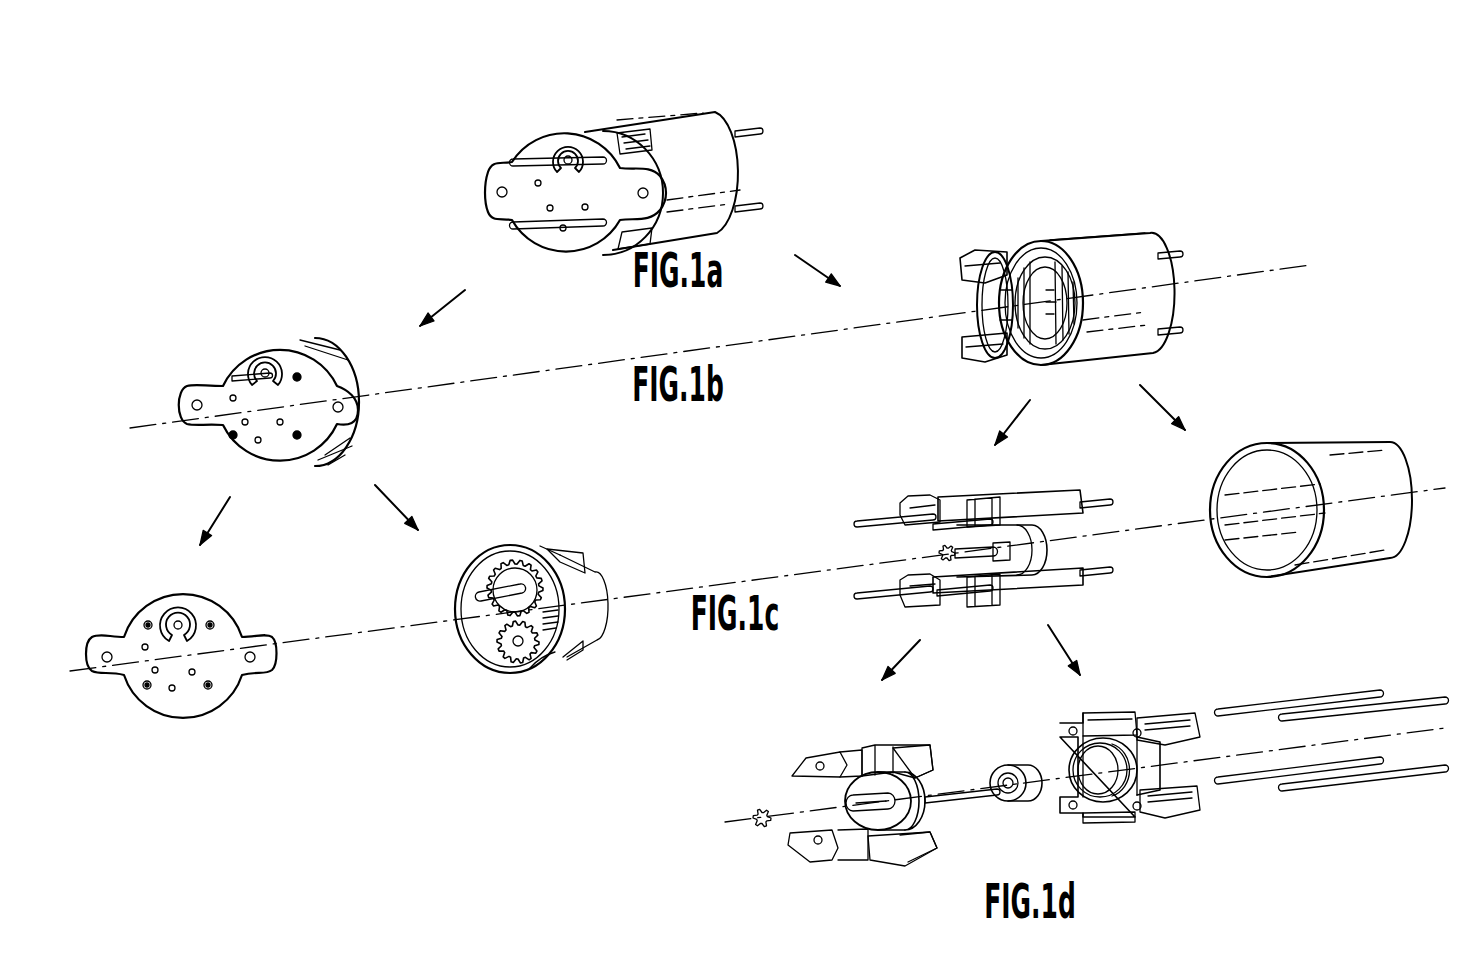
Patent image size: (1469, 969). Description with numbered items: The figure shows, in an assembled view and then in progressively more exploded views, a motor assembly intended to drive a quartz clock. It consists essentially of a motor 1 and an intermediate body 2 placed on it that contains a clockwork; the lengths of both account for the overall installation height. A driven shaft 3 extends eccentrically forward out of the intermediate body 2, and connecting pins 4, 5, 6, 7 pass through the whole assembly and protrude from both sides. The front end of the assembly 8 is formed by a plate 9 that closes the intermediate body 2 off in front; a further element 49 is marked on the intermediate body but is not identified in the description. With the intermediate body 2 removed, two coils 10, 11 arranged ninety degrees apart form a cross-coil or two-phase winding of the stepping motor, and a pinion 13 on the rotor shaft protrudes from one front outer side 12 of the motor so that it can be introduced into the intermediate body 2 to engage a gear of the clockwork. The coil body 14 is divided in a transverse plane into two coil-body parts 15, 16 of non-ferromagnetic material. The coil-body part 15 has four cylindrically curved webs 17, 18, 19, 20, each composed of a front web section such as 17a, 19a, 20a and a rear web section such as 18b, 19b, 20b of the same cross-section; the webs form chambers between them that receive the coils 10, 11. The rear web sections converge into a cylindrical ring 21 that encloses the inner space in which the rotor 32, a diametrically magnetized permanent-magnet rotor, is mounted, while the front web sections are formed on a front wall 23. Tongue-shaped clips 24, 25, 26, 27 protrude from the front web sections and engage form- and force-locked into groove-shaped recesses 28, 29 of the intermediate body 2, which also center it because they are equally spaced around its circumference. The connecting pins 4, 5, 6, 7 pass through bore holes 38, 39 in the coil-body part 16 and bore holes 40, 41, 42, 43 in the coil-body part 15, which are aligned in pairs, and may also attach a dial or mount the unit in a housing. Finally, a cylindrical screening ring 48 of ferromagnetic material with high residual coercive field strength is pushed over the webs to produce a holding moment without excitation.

In FIG. 1A, the motor 1 is at (712, 125).
In FIG. 1B, the motor 1 is at (1138, 250).
In FIG. 1A, the intermediate body 2 is at (606, 130).
In FIG. 1B, the intermediate body 2 is at (342, 362).
In FIG. 1C, the intermediate body 2 is at (540, 545).
In FIG. 1A, the driven shaft 3 is at (510, 198).
In FIG. 1B, the driven shaft 3 is at (235, 378).
In FIG. 1A, the connecting pin 4 is at (512, 162).
In FIG. 1D, the connecting pin 4 is at (1270, 708).
In FIG. 1A, the connecting pin 5 is at (510, 228).
In FIG. 1D, the connecting pin 5 is at (1260, 783).
In FIG. 1A, the connecting pin 6 is at (757, 128).
In FIG. 1D, the connecting pin 6 is at (1427, 701).
In FIG. 1A, the connecting pin 7 is at (758, 210).
In FIG. 1D, the connecting pin 7 is at (1407, 773).
In FIG. 1A, the front end of the assembly 8 is at (553, 243).
In FIG. 1A, the plate 9 is at (565, 137).
In FIG. 1C, the plate 9 is at (203, 612).
In FIG. 1B, the coil 10 is at (1010, 248).
In FIG. 1B, the coil 11 is at (1087, 342).
In FIG. 1B, the front outer side of the motor 12 is at (1010, 352).
In FIG. 1B, the pinion 13 is at (975, 300).
In FIG. 1C, the pinion 13 is at (940, 552).
In FIG. 1D, the pinion 13 is at (763, 810).
In FIG. 1C, the coil body 14 is at (1030, 485).
In FIG. 1D, the coil-body part 15 is at (1176, 756).
In FIG. 1D, the coil-body part 16 is at (834, 789).
In FIG. 1C, the web 17 is at (940, 503).
In FIG. 1D, the front web section 17a is at (853, 752).
In FIG. 1C, the web 18 is at (927, 603).
In FIG. 1D, the rear web section 18b is at (1117, 823).
In FIG. 1C, the web 19 is at (1070, 502).
In FIG. 1D, the front web section 19a is at (933, 767).
In FIG. 1D, the rear web section 19b is at (1187, 732).
In FIG. 1C, the web 20 is at (1067, 593).
In FIG. 1D, the front web section 20a is at (933, 850).
In FIG. 1D, the rear web section 20b is at (1183, 805).
In FIG. 1D, the cylindrical ring 21 is at (1162, 768).
In FIG. 1D, the front wall 23 is at (927, 812).
In FIG. 1D, the tongue-shaped clip 24 is at (803, 762).
In FIG. 1D, the tongue-shaped clip 25 is at (923, 750).
In FIG. 1D, the tongue-shaped clip 26 is at (880, 858).
In FIG. 1D, the tongue-shaped clip 27 is at (792, 848).
In FIG. 1C, the recess 28 is at (583, 570).
In FIG. 1C, the recess 29 is at (580, 657).
In FIG. 1D, the rotor 32 is at (1010, 800).
In FIG. 1D, the bore hole 38 is at (838, 748).
In FIG. 1D, the bore hole 39 is at (837, 857).
In FIG. 1D, the bore hole 40 is at (1072, 730).
In FIG. 1D, the bore hole 41 is at (1160, 722).
In FIG. 1D, the bore hole 42 is at (1140, 807).
In FIG. 1D, the bore hole 43 is at (1077, 803).
In FIG. 1C, the screening ring 48 is at (1332, 455).
In FIG. 1C, the housing rim 49 is at (547, 665).